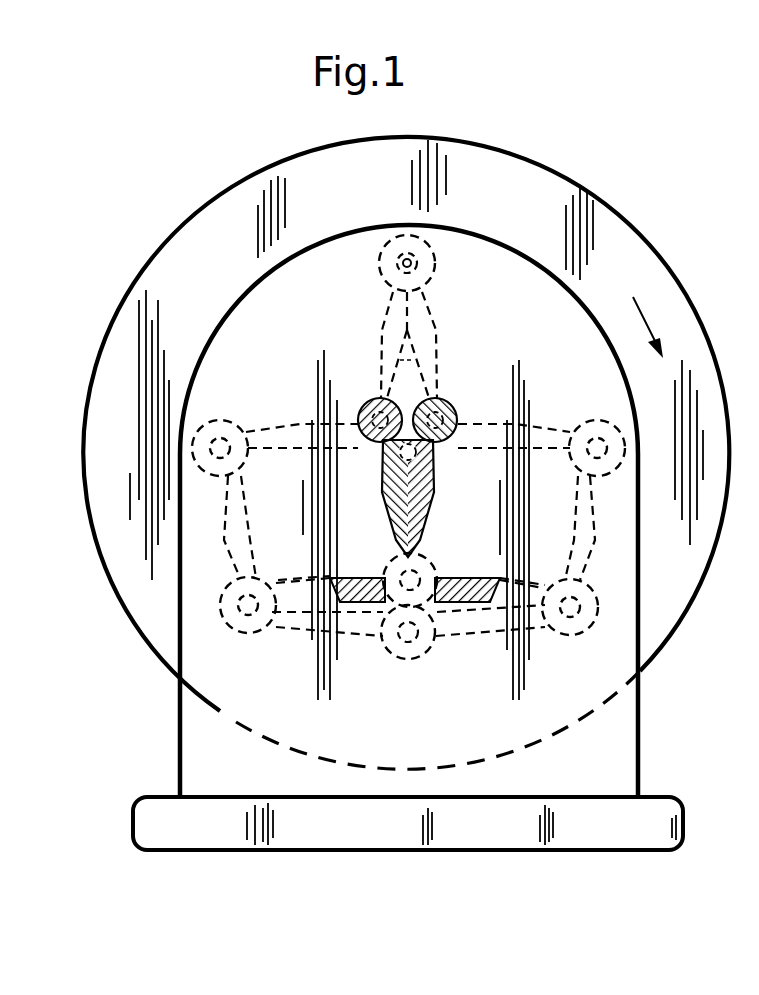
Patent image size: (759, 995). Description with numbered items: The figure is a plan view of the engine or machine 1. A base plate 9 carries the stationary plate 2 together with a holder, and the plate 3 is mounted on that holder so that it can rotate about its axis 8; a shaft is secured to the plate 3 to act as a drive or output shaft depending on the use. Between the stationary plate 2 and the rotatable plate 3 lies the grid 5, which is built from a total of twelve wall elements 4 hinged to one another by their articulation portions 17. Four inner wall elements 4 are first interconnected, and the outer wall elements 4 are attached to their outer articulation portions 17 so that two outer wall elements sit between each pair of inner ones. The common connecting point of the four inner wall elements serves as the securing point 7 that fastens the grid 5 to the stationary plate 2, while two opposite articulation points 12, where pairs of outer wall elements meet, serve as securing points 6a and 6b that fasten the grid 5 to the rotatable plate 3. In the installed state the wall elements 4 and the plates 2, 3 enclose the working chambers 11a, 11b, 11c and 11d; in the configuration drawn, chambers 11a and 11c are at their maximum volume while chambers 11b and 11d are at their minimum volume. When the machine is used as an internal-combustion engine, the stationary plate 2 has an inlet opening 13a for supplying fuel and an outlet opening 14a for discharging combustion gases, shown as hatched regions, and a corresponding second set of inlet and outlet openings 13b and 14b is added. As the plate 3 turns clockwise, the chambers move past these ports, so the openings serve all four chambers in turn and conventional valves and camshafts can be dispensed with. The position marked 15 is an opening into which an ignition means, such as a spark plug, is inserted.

The machine 1 is at (112, 621).
The stationary plate 2 is at (212, 752).
The rotatable plate 3 is at (218, 243).
The wall elements 4 is at (395, 327).
The grid 5 is at (475, 393).
The securing point 6a is at (413, 262).
The securing point 6b is at (393, 645).
The securing point 7 is at (388, 603).
The axis 8 is at (467, 420).
The base plate 9 is at (598, 822).
The working chamber 11a is at (320, 517).
The working chamber 11b is at (458, 615).
The working chamber 11c is at (505, 525).
The working chamber 11d is at (407, 383).
The articulation points 12 is at (400, 262).
The inlet opening 13a is at (437, 475).
The inlet opening 13b is at (280, 580).
The outlet opening 14a is at (383, 472).
The outlet opening 14b is at (500, 585).
The opening 15 is at (441, 607).
The articulation portions 17 is at (434, 262).